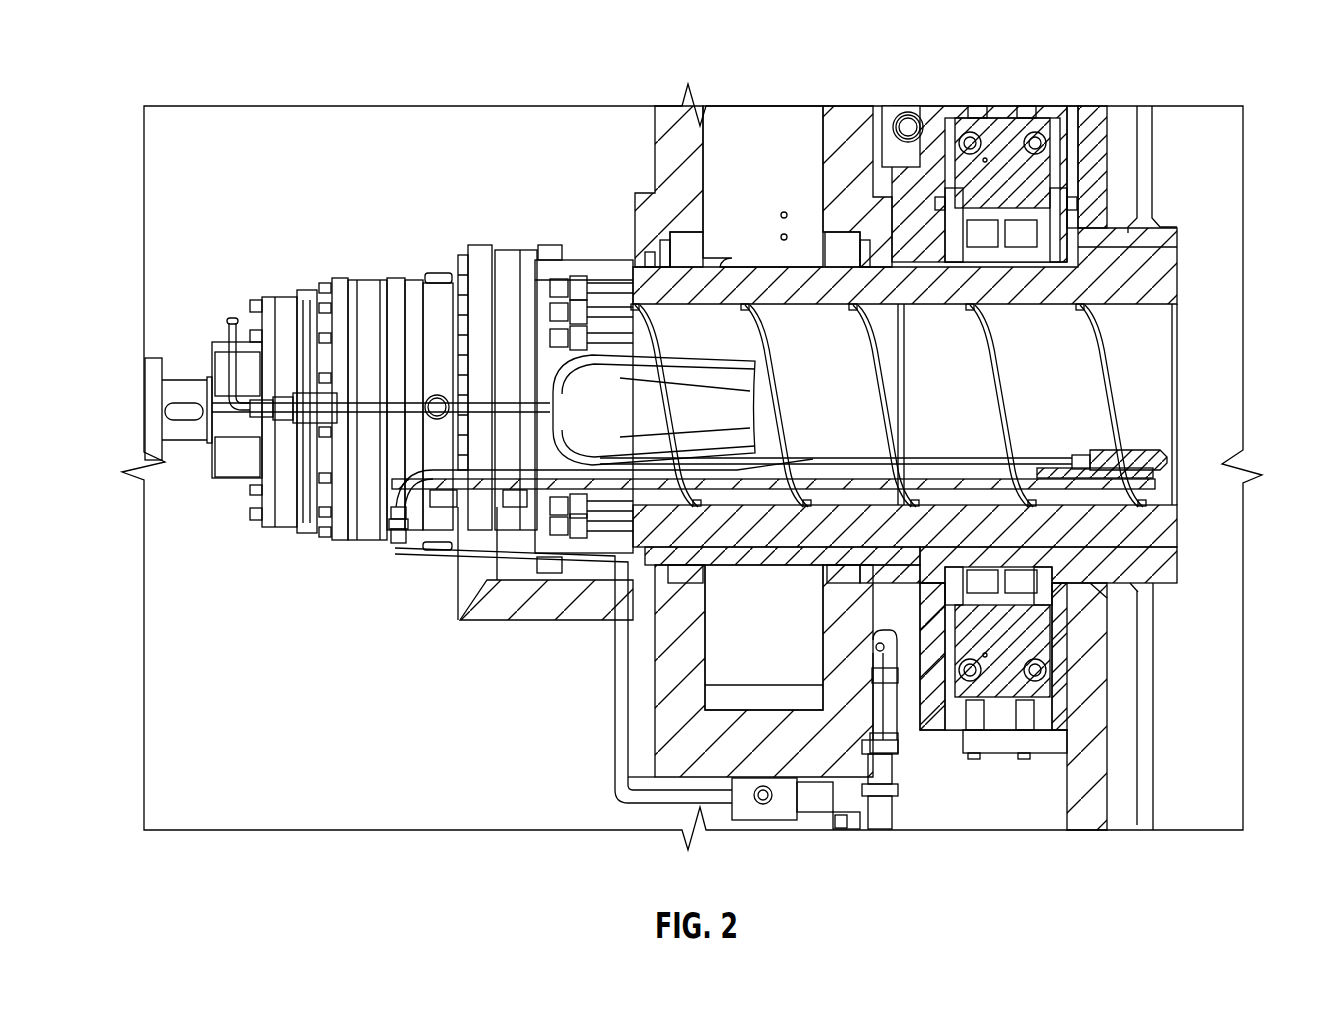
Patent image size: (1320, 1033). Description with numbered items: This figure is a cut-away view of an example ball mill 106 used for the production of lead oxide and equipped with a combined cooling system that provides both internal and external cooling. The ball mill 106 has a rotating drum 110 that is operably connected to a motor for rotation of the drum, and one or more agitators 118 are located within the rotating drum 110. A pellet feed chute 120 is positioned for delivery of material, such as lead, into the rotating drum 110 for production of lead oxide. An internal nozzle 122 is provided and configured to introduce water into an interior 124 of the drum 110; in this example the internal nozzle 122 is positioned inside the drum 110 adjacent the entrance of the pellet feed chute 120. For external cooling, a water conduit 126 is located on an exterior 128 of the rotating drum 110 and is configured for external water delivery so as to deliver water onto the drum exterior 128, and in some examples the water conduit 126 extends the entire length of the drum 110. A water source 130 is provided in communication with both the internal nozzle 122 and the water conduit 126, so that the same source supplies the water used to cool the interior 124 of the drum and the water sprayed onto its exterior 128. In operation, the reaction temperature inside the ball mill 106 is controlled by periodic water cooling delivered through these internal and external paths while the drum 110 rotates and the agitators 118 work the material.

The ball mill 106 is at (979, 80).
The rotating drum 110 is at (1052, 299).
The agitators 118 is at (1117, 403).
The pellet feed chute 120 is at (620, 403).
The internal nozzle 122 is at (1135, 452).
The interior 124 is at (970, 373).
The water conduit 126 is at (757, 555).
The exterior 128 is at (890, 260).
The water source 130 is at (398, 548).